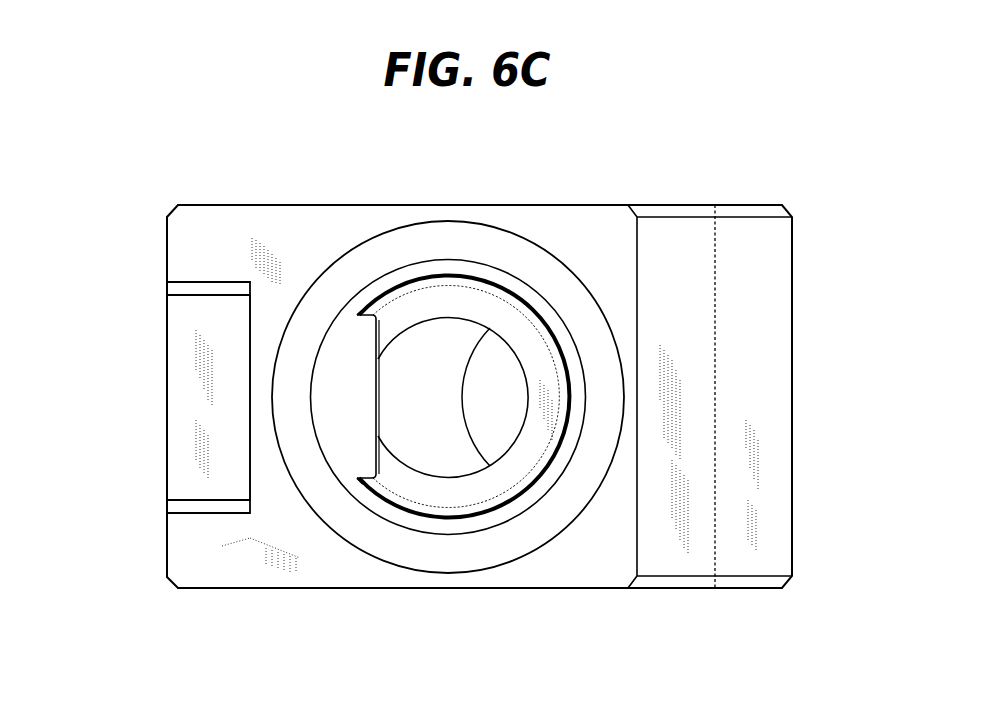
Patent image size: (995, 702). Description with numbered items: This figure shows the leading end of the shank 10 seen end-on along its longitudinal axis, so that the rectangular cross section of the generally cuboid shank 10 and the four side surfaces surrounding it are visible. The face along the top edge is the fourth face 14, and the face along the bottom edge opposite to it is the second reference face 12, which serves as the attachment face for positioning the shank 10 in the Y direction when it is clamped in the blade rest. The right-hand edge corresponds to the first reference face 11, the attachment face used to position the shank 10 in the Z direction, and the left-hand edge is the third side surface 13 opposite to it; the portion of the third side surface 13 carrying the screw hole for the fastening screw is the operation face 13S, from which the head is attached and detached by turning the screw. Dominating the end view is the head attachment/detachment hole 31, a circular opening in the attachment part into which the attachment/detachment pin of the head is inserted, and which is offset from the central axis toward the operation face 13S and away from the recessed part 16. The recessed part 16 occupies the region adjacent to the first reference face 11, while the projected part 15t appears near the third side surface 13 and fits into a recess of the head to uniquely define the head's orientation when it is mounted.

The shank 10 is at (116, 174).
The first reference face 11 is at (797, 309).
The second reference face 12 is at (530, 595).
The third side surface 13 is at (122, 239).
The operation face 13S is at (162, 266).
The fourth face 14 is at (504, 200).
The projected part 15t is at (183, 407).
The recessed part 16 is at (744, 380).
The head attachment/detachment hole 31 is at (438, 406).